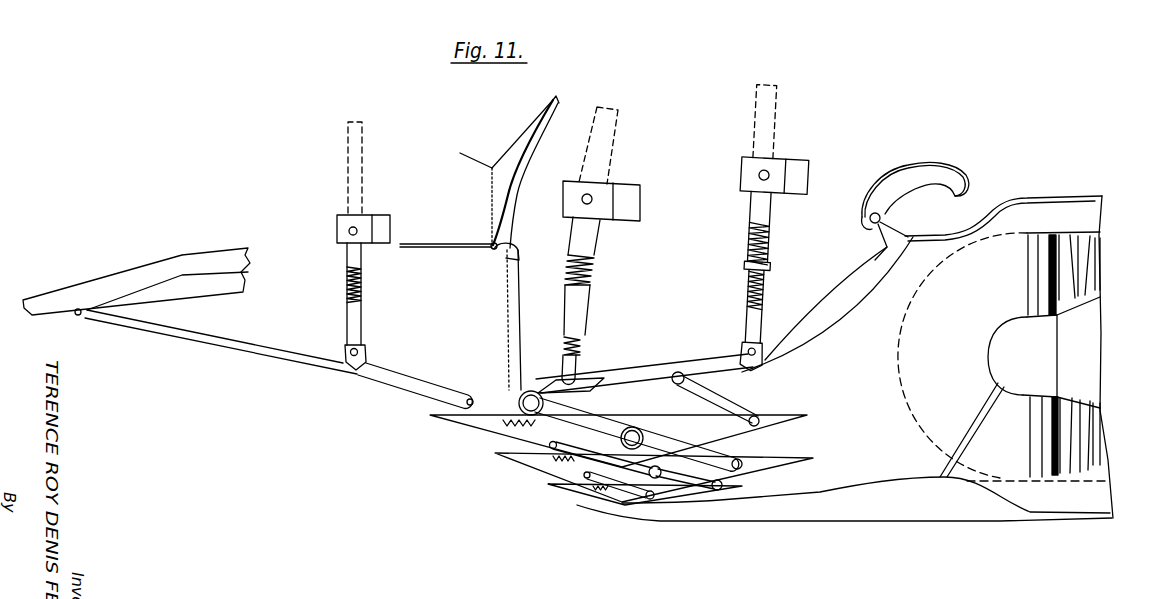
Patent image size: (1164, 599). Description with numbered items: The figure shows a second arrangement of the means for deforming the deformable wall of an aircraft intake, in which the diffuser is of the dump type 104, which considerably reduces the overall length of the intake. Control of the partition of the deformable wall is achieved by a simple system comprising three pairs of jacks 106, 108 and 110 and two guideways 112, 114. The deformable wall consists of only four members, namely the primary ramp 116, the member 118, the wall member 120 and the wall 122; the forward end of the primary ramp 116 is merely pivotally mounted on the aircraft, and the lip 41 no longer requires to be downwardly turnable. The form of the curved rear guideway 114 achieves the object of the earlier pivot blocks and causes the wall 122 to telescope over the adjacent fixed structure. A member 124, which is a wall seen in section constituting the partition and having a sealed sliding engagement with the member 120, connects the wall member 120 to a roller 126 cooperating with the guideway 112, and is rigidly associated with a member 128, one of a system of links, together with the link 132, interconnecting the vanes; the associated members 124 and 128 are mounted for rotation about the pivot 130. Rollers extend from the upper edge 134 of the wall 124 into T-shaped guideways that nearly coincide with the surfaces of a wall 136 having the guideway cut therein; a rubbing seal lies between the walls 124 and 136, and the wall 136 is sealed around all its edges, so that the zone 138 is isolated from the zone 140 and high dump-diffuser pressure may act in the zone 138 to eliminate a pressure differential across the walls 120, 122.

The lip 41 is at (646, 512).
The dump type diffuser 104 is at (880, 402).
The jack 106 is at (346, 268).
The jack 108 is at (597, 262).
The jack 110 is at (760, 209).
The guideway 112 is at (537, 142).
The curved rear guideway 114 is at (936, 170).
The primary ramp 116 is at (240, 347).
The deformable wall member 118 is at (393, 380).
The wall member 120 is at (648, 372).
The wall 122 is at (858, 289).
The wall member 124 is at (508, 325).
The roller 126 is at (496, 251).
The link 128 is at (583, 420).
The pivot 130 is at (525, 400).
The link 132 is at (706, 394).
The upper edge 134 is at (519, 253).
The wall 136 is at (521, 173).
The zone 138 is at (700, 270).
The zone 140 is at (432, 306).